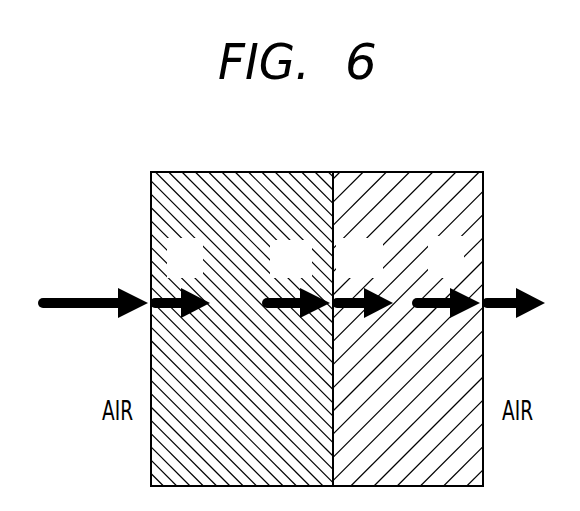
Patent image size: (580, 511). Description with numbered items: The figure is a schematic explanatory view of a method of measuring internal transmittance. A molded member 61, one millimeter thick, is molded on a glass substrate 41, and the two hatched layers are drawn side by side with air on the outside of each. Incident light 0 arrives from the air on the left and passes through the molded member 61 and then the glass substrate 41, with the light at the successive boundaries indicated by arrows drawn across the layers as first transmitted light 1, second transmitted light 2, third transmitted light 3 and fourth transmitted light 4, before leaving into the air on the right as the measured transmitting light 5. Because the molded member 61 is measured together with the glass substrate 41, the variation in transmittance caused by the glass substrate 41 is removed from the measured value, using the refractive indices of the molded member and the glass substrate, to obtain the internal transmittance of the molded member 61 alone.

The molded member 61 is at (235, 178).
The glass substrate 41 is at (412, 180).
The incident light 0 is at (95, 281).
The transmittance T1 arrow 1 is at (182, 281).
The transmittance T2 arrow 2 is at (298, 281).
The transmittance T3 arrow 3 is at (365, 281).
The transmittance T4 arrow 4 is at (448, 281).
The measured transmitting light 5 is at (516, 281).